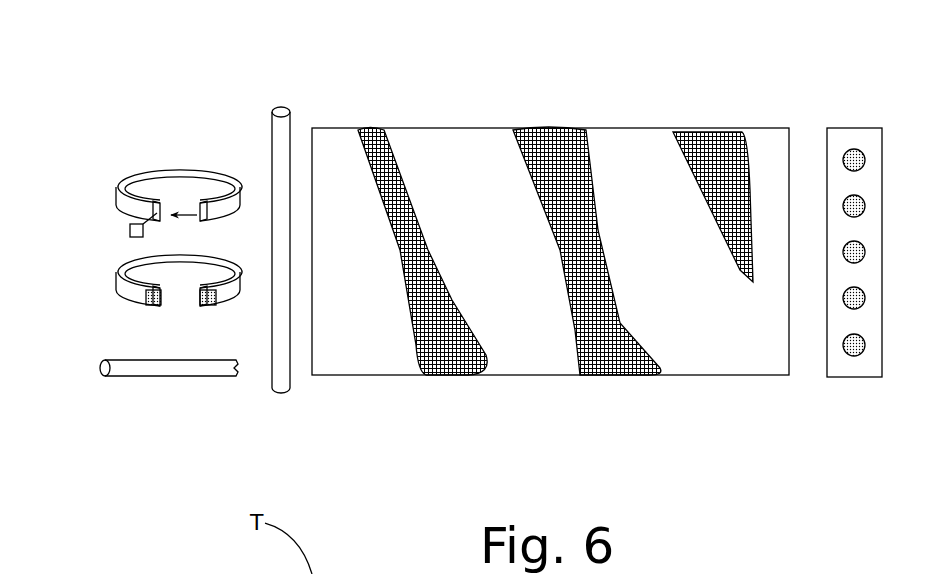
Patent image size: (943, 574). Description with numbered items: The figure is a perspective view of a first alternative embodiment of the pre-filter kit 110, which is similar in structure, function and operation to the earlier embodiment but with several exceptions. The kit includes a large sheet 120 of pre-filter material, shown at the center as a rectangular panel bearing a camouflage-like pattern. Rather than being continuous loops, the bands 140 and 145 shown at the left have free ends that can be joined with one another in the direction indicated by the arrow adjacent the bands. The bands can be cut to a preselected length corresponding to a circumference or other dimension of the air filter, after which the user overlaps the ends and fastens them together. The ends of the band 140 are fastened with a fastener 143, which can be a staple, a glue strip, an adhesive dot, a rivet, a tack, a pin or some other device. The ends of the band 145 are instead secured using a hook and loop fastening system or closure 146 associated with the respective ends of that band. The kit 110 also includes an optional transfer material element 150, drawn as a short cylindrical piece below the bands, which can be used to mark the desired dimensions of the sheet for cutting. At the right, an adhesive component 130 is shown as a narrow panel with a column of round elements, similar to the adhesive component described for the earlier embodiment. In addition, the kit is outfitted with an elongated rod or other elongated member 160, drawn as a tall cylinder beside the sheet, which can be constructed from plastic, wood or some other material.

The pre-filter kit 110 is at (249, 62).
The display panel with camouflage pattern 120 is at (421, 376).
The adhesive component 130 is at (829, 119).
The band 140 is at (113, 201).
The fastener 143 is at (144, 236).
The band 145 is at (113, 283).
The hook and loop fastening system or closure 146 is at (150, 302).
The transfer material element 150 is at (152, 398).
The elongated rod or elongated member 160 is at (280, 393).